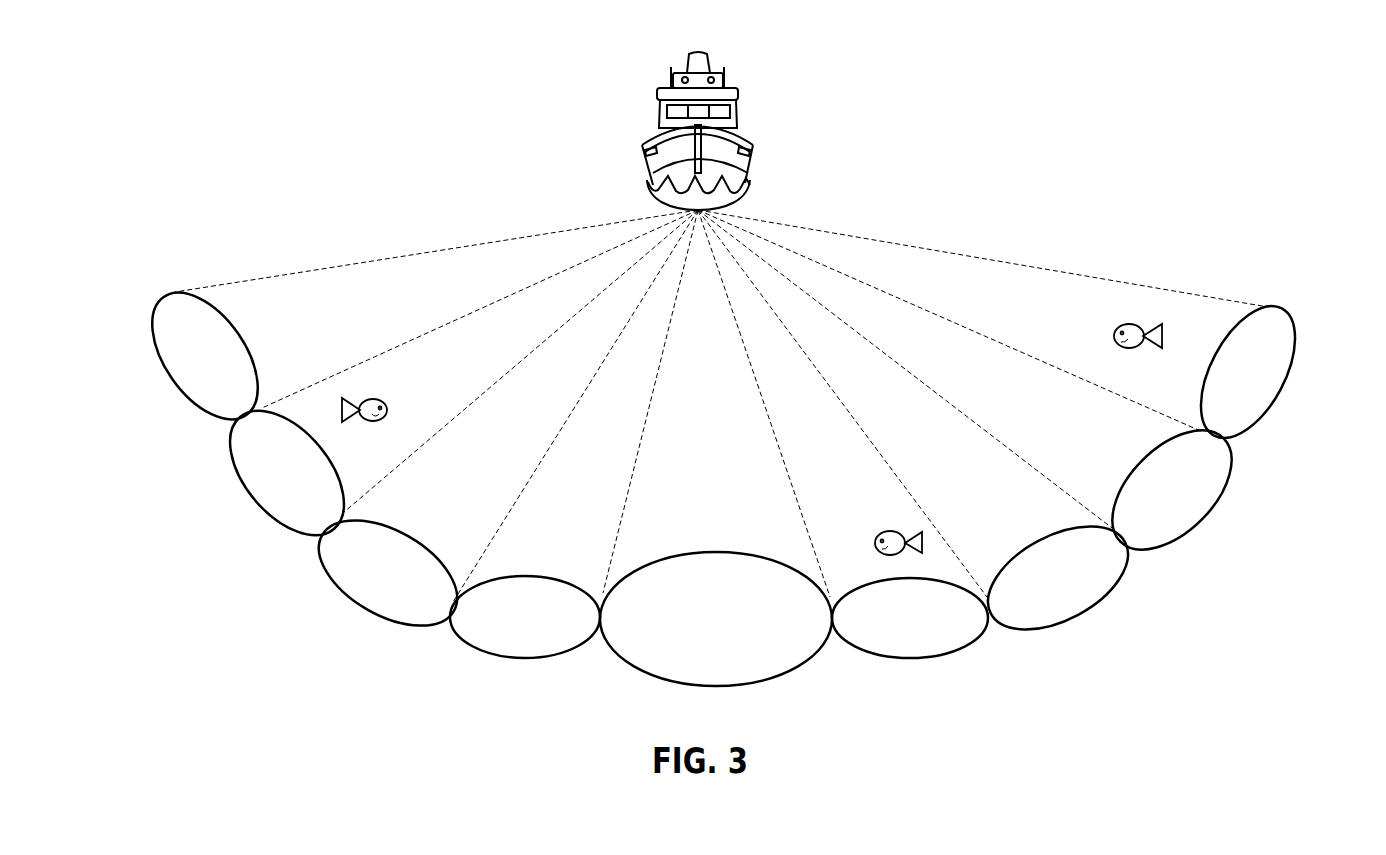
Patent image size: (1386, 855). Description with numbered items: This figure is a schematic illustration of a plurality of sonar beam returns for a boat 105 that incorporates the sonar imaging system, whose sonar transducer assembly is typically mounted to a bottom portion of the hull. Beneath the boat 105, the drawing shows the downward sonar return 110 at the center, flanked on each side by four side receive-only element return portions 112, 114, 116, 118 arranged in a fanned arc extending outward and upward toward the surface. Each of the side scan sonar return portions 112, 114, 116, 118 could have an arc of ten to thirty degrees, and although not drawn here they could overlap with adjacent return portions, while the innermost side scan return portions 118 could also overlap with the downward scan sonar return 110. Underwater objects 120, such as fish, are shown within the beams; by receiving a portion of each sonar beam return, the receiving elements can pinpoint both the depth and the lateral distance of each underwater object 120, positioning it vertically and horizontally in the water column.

The boat 105 is at (752, 164).
The downward sonar return 110 is at (653, 676).
The side scan sonar return portion 112 is at (155, 342).
The side scan sonar return portion 114 is at (243, 478).
The side scan sonar return portion 116 is at (355, 600).
The side scan sonar return portion 118 is at (465, 655).
The underwater object 120 is at (383, 397).